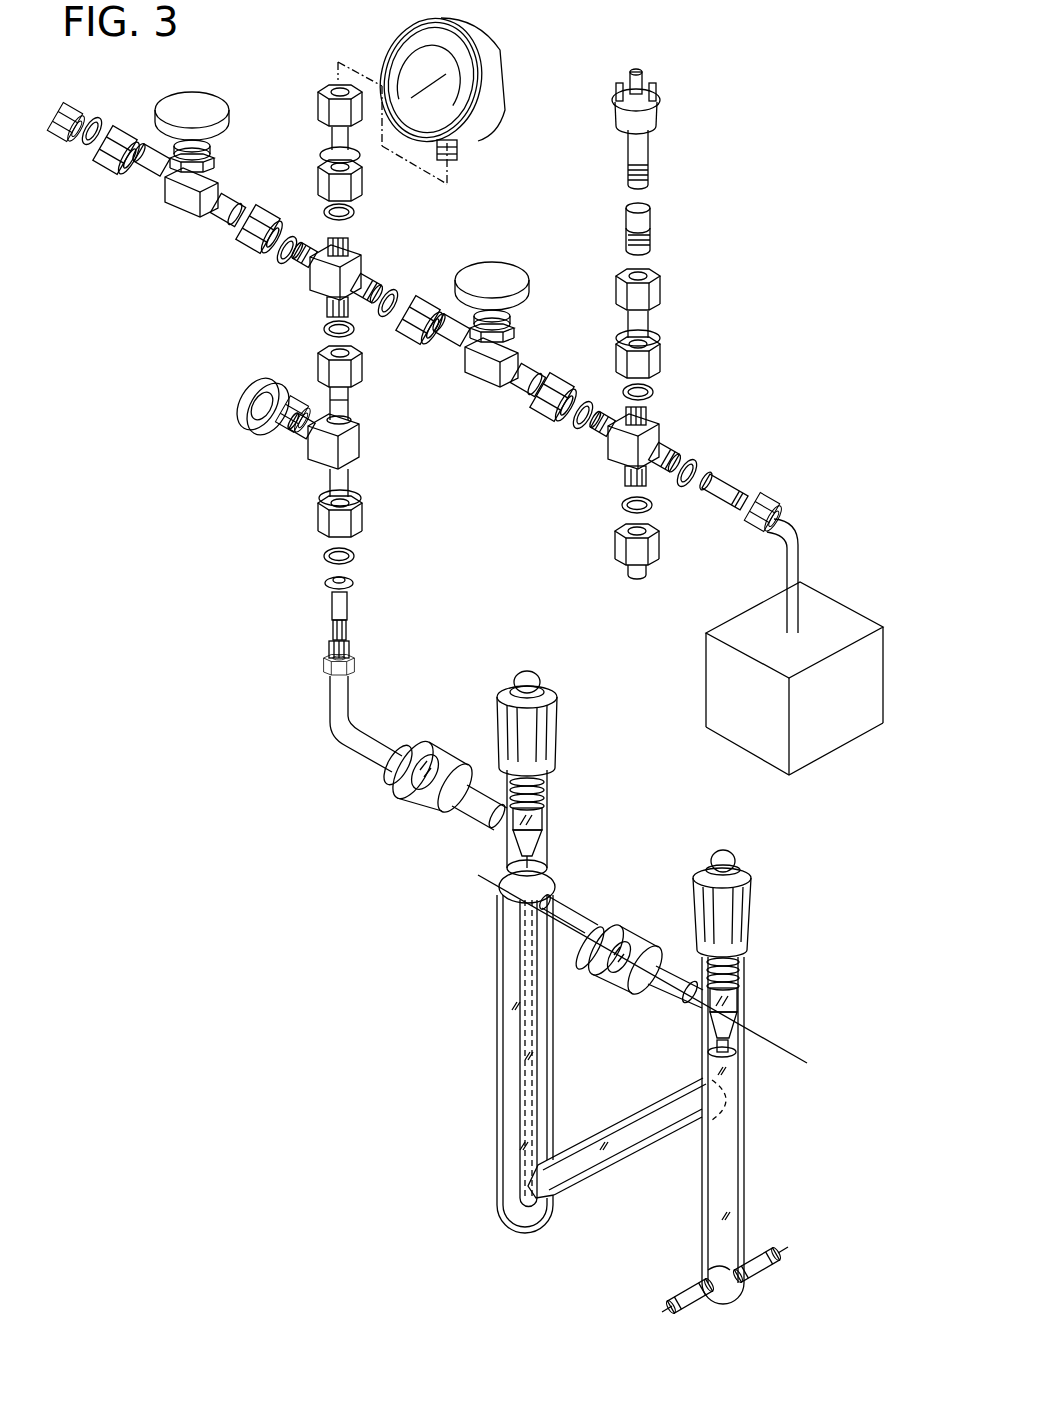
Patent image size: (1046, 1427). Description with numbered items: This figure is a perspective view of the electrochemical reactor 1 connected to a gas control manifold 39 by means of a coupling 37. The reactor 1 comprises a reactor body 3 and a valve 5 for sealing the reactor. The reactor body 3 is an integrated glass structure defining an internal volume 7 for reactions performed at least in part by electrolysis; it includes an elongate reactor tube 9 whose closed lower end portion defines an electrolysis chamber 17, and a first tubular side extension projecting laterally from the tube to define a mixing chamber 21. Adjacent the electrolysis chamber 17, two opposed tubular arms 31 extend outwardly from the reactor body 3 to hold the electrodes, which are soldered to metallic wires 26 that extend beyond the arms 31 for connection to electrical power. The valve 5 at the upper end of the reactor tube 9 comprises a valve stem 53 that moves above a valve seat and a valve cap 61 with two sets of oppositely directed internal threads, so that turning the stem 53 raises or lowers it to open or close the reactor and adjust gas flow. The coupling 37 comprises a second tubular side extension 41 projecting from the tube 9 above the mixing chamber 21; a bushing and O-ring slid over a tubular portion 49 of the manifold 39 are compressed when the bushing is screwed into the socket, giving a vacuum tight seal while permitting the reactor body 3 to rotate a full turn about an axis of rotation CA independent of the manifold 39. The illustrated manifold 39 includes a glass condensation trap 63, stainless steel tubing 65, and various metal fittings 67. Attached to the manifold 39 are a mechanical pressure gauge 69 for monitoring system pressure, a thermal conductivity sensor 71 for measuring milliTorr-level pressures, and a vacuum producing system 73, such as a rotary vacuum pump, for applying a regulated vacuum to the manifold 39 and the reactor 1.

The electrochemical reactor 1 is at (785, 945).
The reactor body 3 is at (765, 1113).
The valve 5 is at (770, 902).
The internal volume 7 is at (720, 1175).
The reactor tube 9 is at (743, 1203).
The electrolysis chamber 17 is at (713, 1260).
The mixing chamber 21 is at (578, 1176).
The metallic wires 26 is at (775, 1248).
The tubular arms 31 is at (685, 1287).
The coupling 37 is at (650, 892).
The manifold 39 is at (198, 276).
The second tubular side extension 41 is at (660, 993).
The tubular portion 49 is at (570, 913).
The valve stem 53 is at (737, 980).
The valve cap 61 is at (748, 877).
The glass condensation trap 63 is at (497, 1012).
The stainless steel tubing 65 is at (138, 167).
The metal fittings 67 is at (327, 358).
The mechanical pressure gauge 69 is at (477, 45).
The thermal conductivity sensor 71 is at (660, 118).
The vacuum producing system 73 is at (718, 673).
The axis of rotation CA is at (760, 1040).